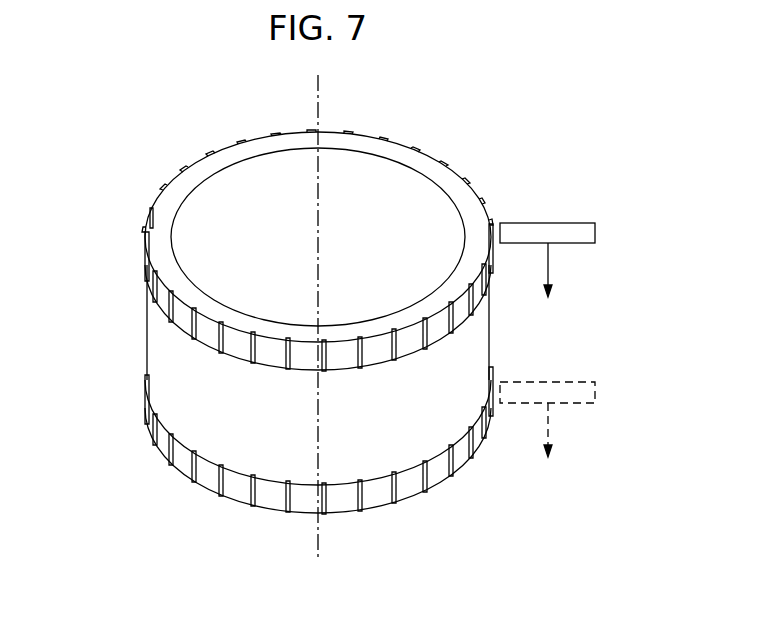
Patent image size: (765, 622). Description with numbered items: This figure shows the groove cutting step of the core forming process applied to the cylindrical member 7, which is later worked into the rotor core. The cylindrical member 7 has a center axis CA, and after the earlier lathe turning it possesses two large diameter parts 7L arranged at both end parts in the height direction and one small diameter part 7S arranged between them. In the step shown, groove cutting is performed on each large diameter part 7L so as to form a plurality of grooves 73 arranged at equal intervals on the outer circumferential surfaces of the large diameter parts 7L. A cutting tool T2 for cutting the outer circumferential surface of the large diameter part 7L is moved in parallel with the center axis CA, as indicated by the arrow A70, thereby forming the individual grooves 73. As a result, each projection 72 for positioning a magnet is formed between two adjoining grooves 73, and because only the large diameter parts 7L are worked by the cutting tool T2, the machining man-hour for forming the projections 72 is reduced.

The cylindrical member 7 is at (161, 227).
The large diameter part 7L is at (140, 258).
The small diameter part 7S is at (145, 344).
The projection 72 is at (396, 352).
The groove 73 is at (378, 355).
The center axis CA is at (318, 113).
The cutting tool T2 is at (566, 223).
The arrow A70 is at (555, 262).